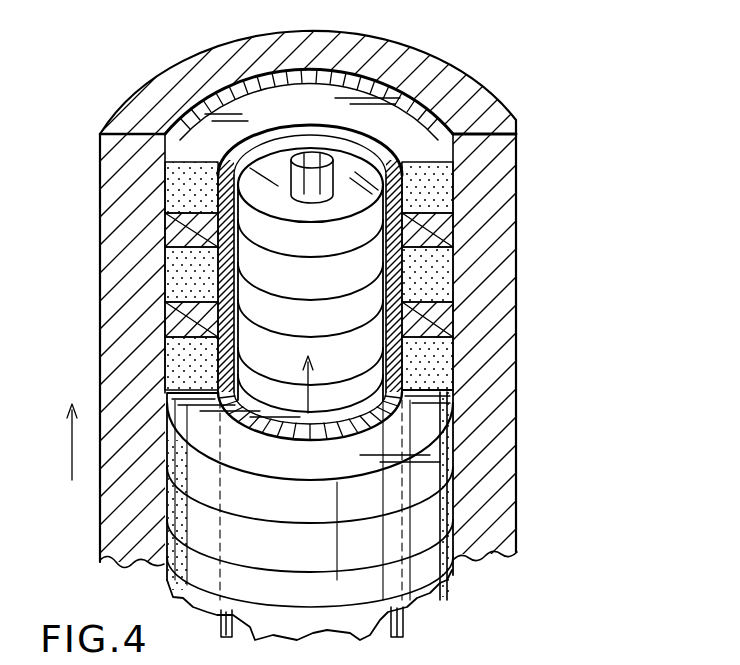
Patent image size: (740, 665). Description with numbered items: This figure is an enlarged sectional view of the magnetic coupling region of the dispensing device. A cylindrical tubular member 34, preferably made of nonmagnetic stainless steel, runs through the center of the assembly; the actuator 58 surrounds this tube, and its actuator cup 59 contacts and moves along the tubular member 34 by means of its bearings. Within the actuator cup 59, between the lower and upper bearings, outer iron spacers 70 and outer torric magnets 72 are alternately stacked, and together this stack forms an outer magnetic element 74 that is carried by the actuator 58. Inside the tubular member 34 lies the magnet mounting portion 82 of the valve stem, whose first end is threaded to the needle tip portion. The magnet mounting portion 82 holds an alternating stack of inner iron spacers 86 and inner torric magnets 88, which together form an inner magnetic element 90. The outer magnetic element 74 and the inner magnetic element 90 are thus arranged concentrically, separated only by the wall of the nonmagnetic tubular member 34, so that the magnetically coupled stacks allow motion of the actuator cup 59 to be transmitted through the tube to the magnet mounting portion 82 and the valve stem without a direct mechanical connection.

The cylindrical tubular member 34 is at (323, 127).
The actuator 58 is at (517, 121).
The actuator cup 59 is at (505, 477).
The outer iron spacers 70 is at (453, 240).
The outer torric magnets 72 is at (167, 185).
The outer magnetic element 74 is at (413, 128).
The magnet mounting portion 82 is at (445, 177).
The inner iron spacers 86 is at (310, 280).
The inner torric magnets 88 is at (310, 338).
The inner magnetic element 90 is at (273, 178).